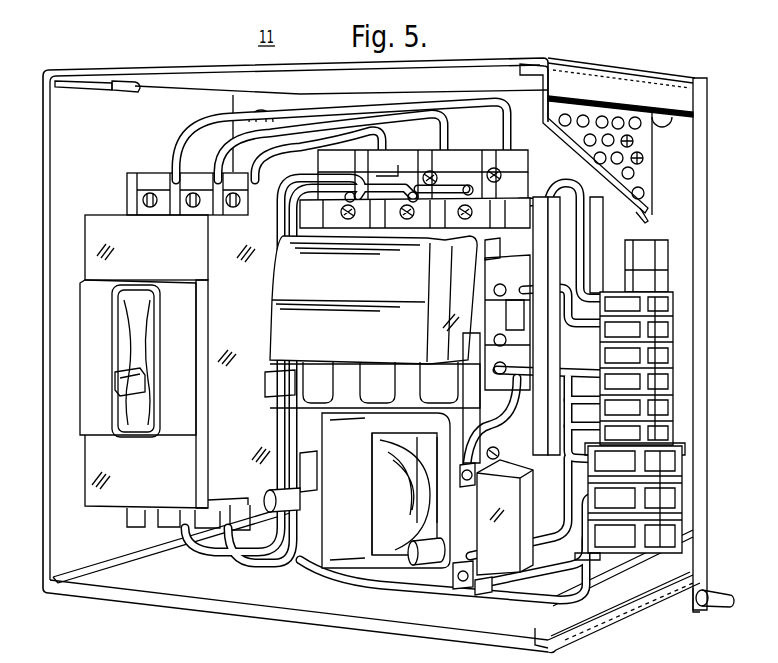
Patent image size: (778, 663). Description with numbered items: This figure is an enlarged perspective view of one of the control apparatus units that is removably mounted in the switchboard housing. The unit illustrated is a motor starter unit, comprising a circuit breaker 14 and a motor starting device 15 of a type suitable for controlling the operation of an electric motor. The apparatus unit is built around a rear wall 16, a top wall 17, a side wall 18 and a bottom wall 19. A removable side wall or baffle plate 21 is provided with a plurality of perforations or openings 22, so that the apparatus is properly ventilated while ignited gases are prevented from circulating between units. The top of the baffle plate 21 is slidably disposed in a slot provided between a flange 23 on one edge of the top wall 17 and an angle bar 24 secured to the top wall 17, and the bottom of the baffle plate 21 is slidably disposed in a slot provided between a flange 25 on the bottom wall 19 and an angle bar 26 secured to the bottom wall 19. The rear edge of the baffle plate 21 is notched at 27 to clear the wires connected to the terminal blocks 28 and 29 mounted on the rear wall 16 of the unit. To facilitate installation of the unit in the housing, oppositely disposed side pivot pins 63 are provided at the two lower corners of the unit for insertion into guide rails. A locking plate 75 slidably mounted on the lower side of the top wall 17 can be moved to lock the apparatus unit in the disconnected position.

The circuit breaker 14 is at (105, 256).
The motor starting device 15 is at (350, 572).
The rear wall 16 is at (690, 228).
The top wall 17 is at (487, 64).
The side wall 18 is at (48, 358).
The bottom wall 19 is at (236, 608).
The baffle plate 21 is at (644, 170).
The perforations 22 is at (633, 142).
The flange 23 is at (627, 84).
The angle bar 24 is at (531, 68).
The flange 25 is at (597, 615).
The angle bar 26 is at (540, 640).
The notch 27 is at (690, 562).
The terminal block 28 is at (681, 465).
The terminal block 29 is at (686, 358).
The side pivot pins 63 is at (727, 594).
The locking plate 75 is at (110, 80).